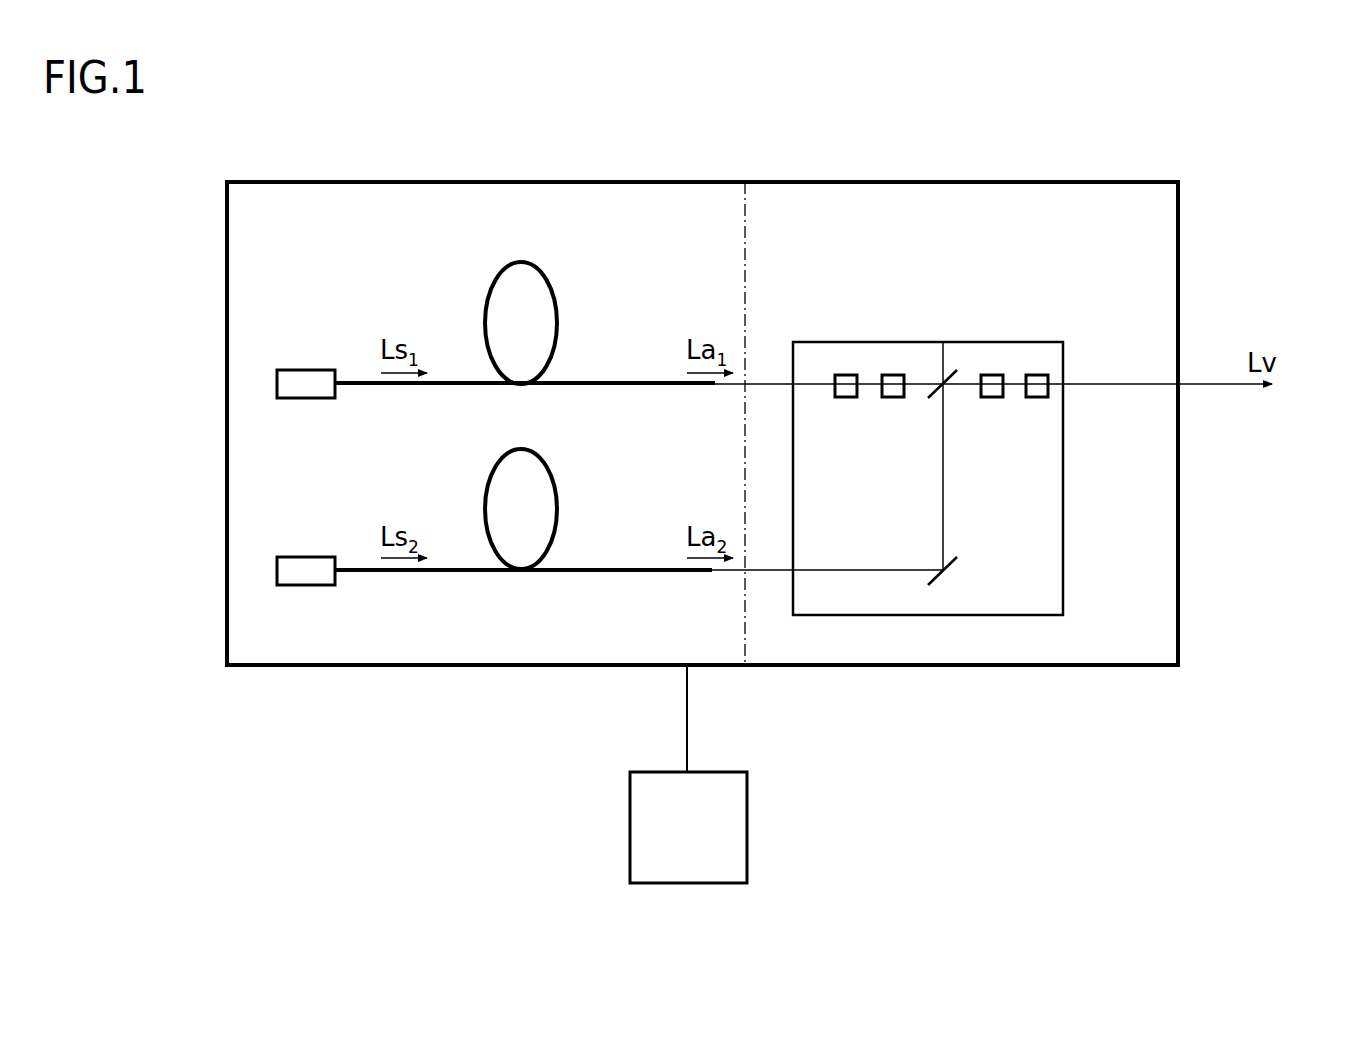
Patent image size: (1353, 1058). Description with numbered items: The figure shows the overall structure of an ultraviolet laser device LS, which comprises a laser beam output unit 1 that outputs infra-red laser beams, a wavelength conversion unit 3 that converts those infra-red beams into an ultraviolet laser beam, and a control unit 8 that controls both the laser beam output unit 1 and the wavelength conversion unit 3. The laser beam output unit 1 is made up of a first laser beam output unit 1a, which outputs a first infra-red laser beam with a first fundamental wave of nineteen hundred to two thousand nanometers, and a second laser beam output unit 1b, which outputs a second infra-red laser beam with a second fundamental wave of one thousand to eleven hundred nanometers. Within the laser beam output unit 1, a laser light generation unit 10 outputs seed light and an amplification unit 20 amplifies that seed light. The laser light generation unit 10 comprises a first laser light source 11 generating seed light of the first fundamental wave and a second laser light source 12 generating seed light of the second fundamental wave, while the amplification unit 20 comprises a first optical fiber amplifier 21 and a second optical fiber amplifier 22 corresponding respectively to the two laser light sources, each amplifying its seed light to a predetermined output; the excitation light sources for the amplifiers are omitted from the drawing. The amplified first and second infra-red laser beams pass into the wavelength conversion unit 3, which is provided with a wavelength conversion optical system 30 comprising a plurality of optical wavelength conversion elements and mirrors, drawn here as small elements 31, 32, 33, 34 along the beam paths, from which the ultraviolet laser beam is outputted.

The laser beam output unit 1 is at (545, 181).
The wavelength conversion unit 3 is at (962, 181).
The ultraviolet laser device LS is at (1243, 142).
The first laser beam output unit 1a is at (214, 385).
The second laser beam output unit 1b is at (214, 574).
The laser light generation unit 10 is at (330, 255).
The first laser light source 11 is at (313, 370).
The second laser light source 12 is at (313, 557).
The amplification unit 20 is at (592, 258).
The first optical fiber amplifier 21 is at (558, 323).
The second optical fiber amplifier 22 is at (558, 510).
The wavelength conversion optical system 30 is at (955, 340).
The first optical element 31 is at (845, 397).
The second optical element 32 is at (893, 397).
The third optical element 33 is at (992, 397).
The fourth optical element 34 is at (1037, 397).
The control unit 8 is at (747, 828).